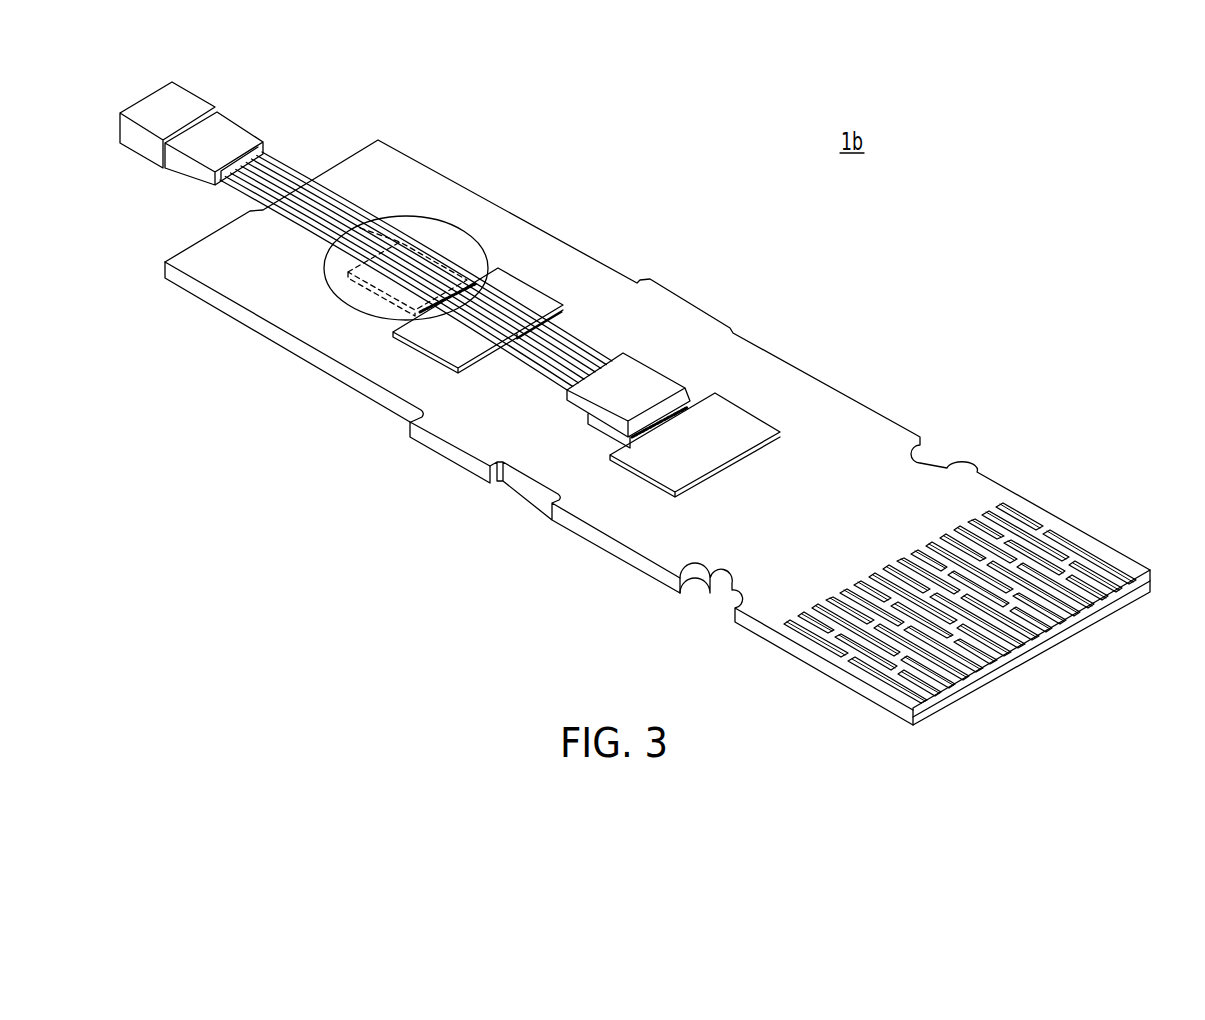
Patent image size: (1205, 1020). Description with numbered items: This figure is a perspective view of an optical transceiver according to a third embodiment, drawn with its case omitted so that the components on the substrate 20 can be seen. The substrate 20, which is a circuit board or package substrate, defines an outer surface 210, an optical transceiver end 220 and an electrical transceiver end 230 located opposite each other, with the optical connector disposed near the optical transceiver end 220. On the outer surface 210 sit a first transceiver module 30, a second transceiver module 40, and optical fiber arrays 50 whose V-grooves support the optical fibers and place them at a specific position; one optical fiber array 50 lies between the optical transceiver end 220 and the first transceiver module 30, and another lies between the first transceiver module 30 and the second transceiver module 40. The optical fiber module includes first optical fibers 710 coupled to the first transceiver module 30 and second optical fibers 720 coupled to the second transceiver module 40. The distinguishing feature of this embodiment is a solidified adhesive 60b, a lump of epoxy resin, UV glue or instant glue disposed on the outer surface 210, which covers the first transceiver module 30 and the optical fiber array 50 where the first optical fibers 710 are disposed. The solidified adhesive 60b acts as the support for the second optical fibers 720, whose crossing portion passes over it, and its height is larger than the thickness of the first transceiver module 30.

The substrate 20 is at (898, 408).
The outer surface 210 is at (825, 405).
The optical transceiver end 220 is at (183, 244).
The electrical transceiver end 230 is at (1100, 570).
The first transceiver module 30 is at (527, 293).
The second transceiver module 40 is at (724, 437).
The optical fiber array 50 is at (633, 387).
The solidified adhesive 60b is at (340, 284).
The first optical fibers 710 is at (307, 233).
The second optical fibers 720 is at (350, 198).